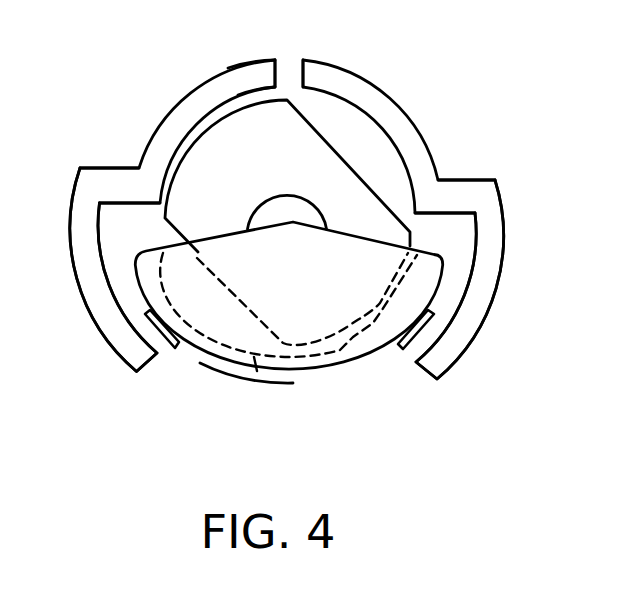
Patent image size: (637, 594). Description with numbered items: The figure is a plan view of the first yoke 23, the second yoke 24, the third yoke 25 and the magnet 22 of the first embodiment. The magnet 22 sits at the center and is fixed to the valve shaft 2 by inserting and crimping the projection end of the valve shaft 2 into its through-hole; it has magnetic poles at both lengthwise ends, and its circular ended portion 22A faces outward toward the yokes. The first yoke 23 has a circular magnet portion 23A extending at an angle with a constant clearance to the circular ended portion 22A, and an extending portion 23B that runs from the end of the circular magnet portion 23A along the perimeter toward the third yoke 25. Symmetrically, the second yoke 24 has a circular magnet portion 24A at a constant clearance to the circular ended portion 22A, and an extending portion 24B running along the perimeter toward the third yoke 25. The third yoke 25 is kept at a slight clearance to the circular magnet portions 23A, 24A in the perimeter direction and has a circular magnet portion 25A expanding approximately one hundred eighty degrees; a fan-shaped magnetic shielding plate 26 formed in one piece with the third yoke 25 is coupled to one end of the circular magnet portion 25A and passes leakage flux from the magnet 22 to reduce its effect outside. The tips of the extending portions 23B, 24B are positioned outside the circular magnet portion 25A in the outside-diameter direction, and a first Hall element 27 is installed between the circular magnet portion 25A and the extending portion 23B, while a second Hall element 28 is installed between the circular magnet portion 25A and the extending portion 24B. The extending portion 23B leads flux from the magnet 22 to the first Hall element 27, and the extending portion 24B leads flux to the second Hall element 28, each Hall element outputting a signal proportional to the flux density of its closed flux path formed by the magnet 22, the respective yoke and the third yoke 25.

The valve shaft 2 is at (300, 203).
The magnet 22 is at (278, 117).
The circular ended portion 22A is at (218, 120).
The first yoke 23 is at (403, 133).
The circular magnet portion 23A is at (430, 180).
The extending portion 23B is at (477, 310).
The second yoke 24 is at (171, 128).
The circular magnet portion 24A is at (143, 172).
The extending portion 24B is at (105, 313).
The third yoke 25 is at (338, 365).
The circular magnet portion 25A is at (245, 370).
The magnetic shielding plate 26 is at (367, 283).
The first Hall element 27 is at (403, 353).
The second Hall element 28 is at (170, 345).